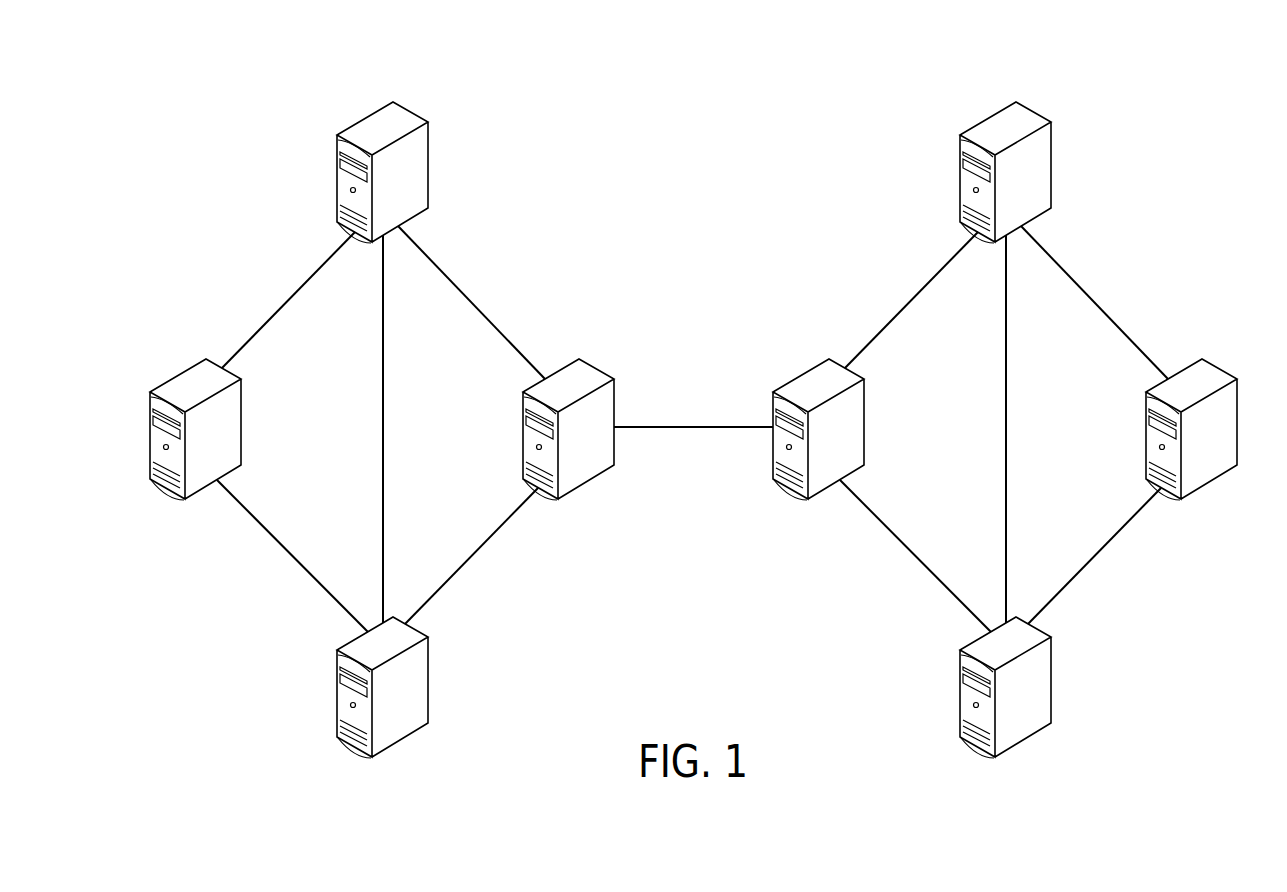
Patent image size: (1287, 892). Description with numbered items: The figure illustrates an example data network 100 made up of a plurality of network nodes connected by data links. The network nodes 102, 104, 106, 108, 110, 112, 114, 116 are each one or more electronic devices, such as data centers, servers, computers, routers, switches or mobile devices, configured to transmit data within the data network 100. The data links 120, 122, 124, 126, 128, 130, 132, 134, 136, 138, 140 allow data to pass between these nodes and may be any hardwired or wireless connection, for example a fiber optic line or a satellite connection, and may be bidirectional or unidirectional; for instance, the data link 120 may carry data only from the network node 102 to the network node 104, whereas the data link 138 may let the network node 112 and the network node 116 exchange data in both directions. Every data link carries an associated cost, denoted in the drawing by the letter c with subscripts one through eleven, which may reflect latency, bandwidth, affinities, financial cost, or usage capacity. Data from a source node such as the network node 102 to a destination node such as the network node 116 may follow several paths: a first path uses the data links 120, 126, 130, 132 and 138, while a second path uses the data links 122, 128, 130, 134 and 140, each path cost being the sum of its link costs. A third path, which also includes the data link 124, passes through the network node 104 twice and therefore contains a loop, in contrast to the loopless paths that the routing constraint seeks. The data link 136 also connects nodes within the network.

The data network 100 is at (212, 147).
The network node 102 is at (208, 373).
The network node 104 is at (398, 116).
The network node 106 is at (413, 715).
The network node 108 is at (585, 373).
The network node 110 is at (830, 373).
The network node 112 is at (1021, 116).
The network node 114 is at (1036, 715).
The network node 116 is at (1208, 373).
The data link 120 is at (268, 319).
The data link 122 is at (260, 523).
The data link 124 is at (383, 385).
The data link 126 is at (518, 342).
The data link 128 is at (500, 531).
The data link 130 is at (710, 428).
The data link 132 is at (893, 318).
The data link 134 is at (883, 523).
The data link 136 is at (1006, 385).
The data link 138 is at (1141, 342).
The data link 140 is at (1123, 531).